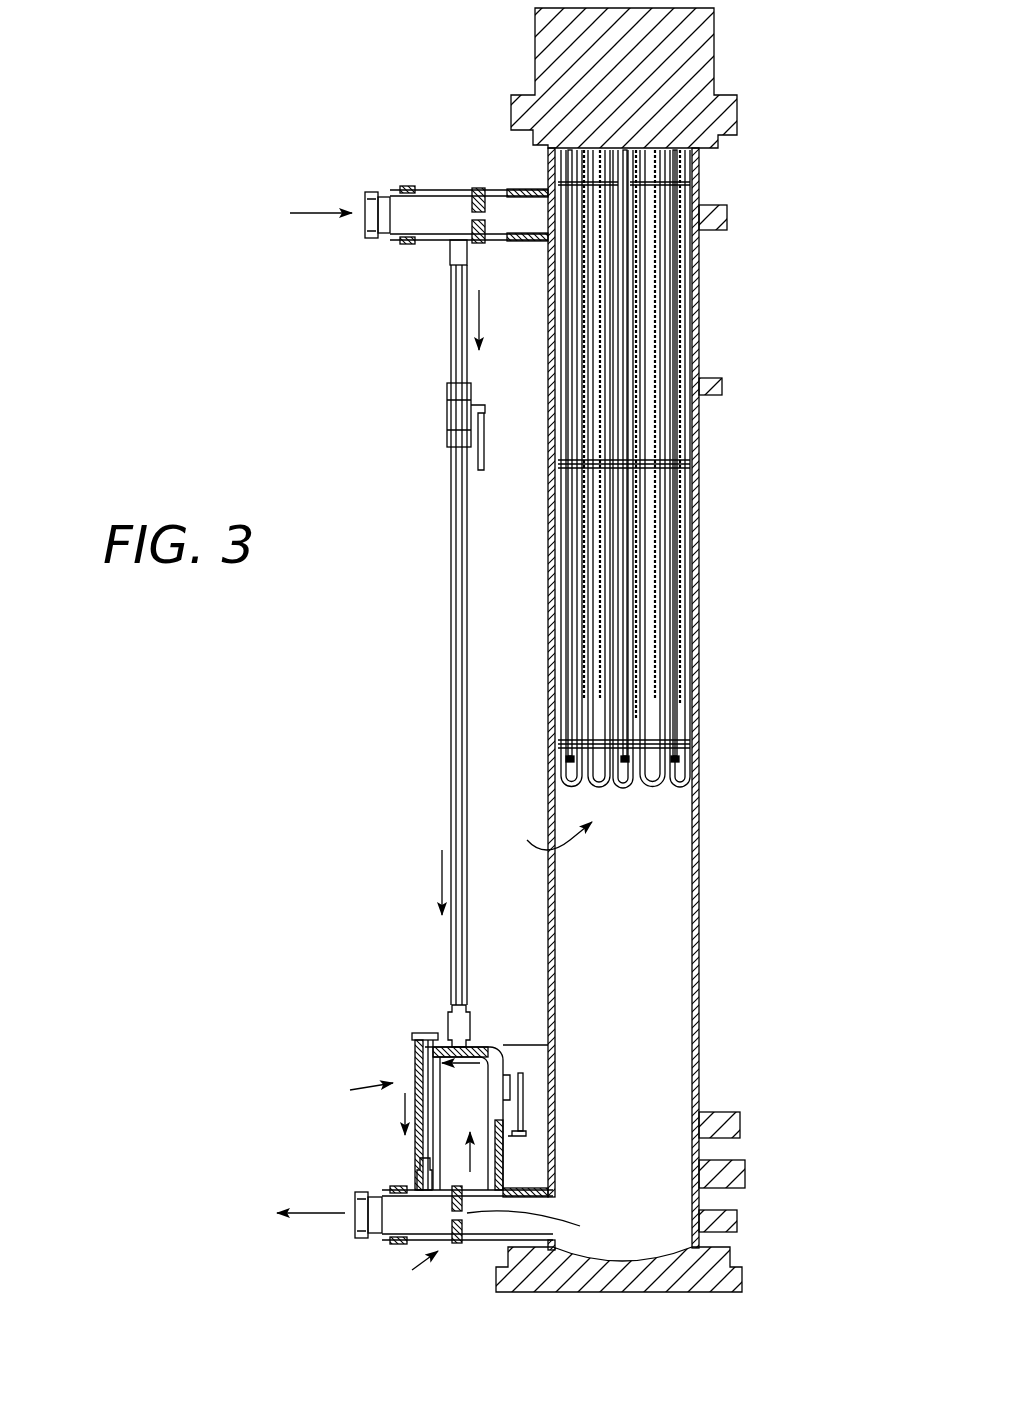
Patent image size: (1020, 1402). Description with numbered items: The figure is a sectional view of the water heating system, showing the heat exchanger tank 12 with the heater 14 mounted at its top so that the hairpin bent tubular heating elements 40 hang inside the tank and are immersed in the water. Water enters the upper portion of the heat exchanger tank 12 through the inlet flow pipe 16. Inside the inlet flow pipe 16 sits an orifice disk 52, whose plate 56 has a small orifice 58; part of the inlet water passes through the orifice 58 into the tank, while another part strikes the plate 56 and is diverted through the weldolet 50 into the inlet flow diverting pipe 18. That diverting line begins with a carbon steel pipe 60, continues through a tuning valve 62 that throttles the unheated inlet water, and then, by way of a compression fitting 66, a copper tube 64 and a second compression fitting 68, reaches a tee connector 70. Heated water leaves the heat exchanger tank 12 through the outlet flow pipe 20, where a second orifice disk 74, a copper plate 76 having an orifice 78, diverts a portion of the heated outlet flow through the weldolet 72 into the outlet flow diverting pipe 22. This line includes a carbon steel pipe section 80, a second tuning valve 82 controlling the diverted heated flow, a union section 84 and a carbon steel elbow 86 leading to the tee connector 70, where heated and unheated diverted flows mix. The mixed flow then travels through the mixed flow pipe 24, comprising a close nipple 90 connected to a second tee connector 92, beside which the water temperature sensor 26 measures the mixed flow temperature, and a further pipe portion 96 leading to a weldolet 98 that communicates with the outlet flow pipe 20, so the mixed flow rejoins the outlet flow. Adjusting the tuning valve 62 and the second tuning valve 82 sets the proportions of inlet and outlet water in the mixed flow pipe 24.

The heat exchanger tank 12 is at (700, 878).
The heater 14 is at (548, 825).
The inlet flow pipe 16 is at (440, 190).
The inlet flow diverting pipe 18 is at (435, 635).
The outlet flow pipe 20 is at (461, 1248).
The outlet flow diverting pipe 22 is at (506, 1120).
The mixed flow pipe 24 is at (355, 1097).
The water temperature sensor 26 is at (412, 1036).
The heating elements 40 is at (640, 795).
The weldolet 50 is at (449, 250).
The orifice disk 52 is at (480, 186).
The plate 56 is at (503, 193).
The orifice 58 is at (490, 222).
The carbon steel pipe 60 is at (452, 352).
The tuning valve 62 is at (447, 395).
The copper tube 64 is at (452, 722).
The compression fitting 66 is at (450, 445).
The second compression fitting 68 is at (452, 1005).
The tee connector 70 is at (481, 1045).
The weldolet 72 is at (506, 1194).
The second orifice disk 74 is at (423, 1238).
The copper plate 76 is at (454, 1147).
The orifice 78 is at (539, 1219).
The carbon steel pipe section 80 is at (504, 1186).
The second tuning valve 82 is at (524, 1134).
The union section 84 is at (489, 1086).
The carbon steel elbow 86 is at (499, 1052).
The close nipple 90 is at (437, 1035).
The second tee connector 92 is at (413, 1055).
The portion of the mixed flow pipe 96 is at (399, 1115).
The weldolet 98 is at (425, 1185).